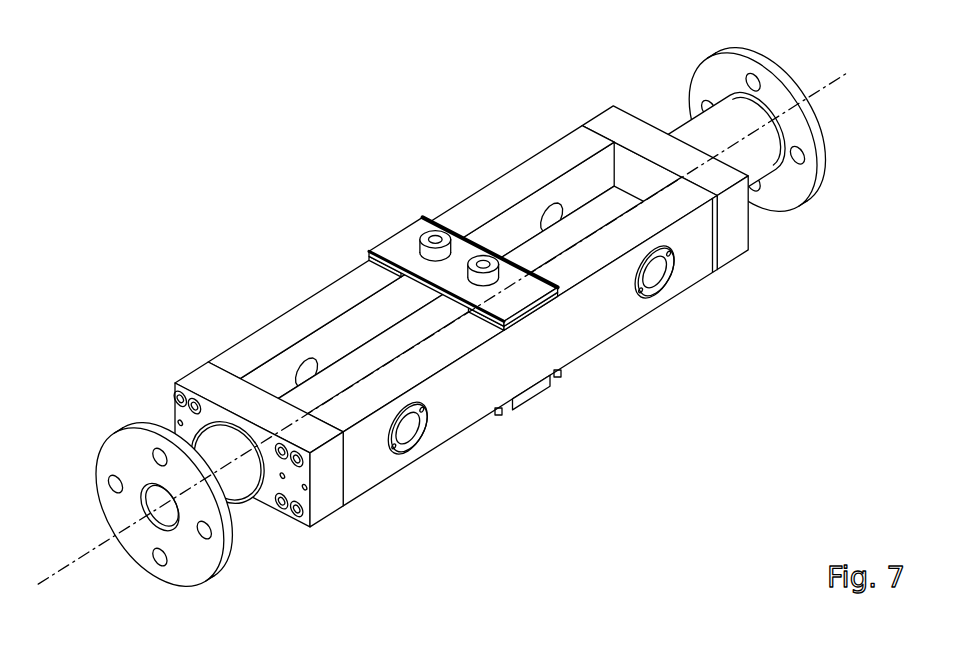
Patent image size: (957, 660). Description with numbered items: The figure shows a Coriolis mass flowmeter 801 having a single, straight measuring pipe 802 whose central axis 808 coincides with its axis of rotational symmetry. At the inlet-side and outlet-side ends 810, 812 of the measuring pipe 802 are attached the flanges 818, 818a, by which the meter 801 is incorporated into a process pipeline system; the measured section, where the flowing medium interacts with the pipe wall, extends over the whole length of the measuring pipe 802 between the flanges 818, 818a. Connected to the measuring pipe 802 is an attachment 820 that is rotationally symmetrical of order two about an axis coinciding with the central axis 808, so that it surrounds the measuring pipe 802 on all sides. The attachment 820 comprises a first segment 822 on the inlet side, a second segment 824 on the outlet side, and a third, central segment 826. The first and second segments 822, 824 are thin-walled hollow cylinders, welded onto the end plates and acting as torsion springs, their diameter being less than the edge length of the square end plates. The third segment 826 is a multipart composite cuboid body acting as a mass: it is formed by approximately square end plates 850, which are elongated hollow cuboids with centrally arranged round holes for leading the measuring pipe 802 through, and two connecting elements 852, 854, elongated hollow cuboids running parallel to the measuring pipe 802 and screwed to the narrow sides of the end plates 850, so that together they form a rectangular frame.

The Coriolis mass flowmeter 801 is at (449, 323).
The measuring pipe 802 is at (582, 193).
The central axis 808 is at (725, 146).
The inlet-side end of the measuring pipe 810 is at (227, 515).
The outlet-side end of the measuring pipe 812 is at (715, 164).
The inlet-side flange 818 is at (115, 457).
The outlet-side flange 818a is at (735, 64).
The attachment 820 is at (464, 292).
The first segment 822 is at (250, 493).
The second segment 824 is at (745, 152).
The third segment 826 is at (612, 352).
The end plate 850 is at (732, 225).
The connecting element 852 is at (520, 355).
The connecting element 854 is at (468, 212).